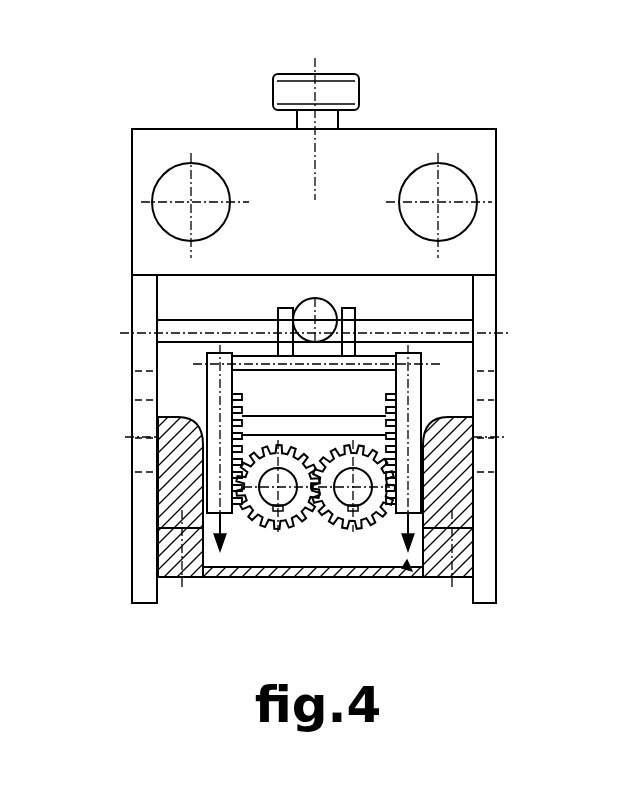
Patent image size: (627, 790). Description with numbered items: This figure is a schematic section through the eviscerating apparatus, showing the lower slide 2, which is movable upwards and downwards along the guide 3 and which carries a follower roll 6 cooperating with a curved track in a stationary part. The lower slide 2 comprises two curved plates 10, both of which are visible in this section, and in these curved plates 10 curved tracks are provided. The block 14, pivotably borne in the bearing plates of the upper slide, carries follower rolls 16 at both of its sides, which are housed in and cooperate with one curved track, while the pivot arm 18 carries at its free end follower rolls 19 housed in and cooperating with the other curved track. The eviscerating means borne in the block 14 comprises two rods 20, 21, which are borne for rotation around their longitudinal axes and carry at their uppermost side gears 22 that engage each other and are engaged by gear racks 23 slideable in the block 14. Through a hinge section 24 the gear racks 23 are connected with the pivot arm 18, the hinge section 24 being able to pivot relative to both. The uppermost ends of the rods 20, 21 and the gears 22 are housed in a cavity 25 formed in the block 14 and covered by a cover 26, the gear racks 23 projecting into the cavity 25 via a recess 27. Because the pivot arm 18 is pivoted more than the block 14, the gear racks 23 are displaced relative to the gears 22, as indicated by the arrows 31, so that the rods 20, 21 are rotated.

The lower slide 2 is at (238, 150).
The guide 3 is at (182, 178).
The follower roll 6 is at (338, 85).
The curved plates 10 is at (147, 517).
The block 14 is at (178, 452).
The follower rolls 16 is at (143, 463).
The pivot arm 18 is at (320, 300).
The follower rolls 19 is at (142, 352).
The rod 20 is at (363, 494).
The rod 21 is at (290, 495).
The gears 22 is at (322, 500).
The gear racks 23 is at (212, 390).
The hinge section 24 is at (352, 372).
The cavity 25 is at (408, 565).
The cover 26 is at (245, 578).
The recess 27 is at (280, 428).
The arrows 31 is at (226, 520).